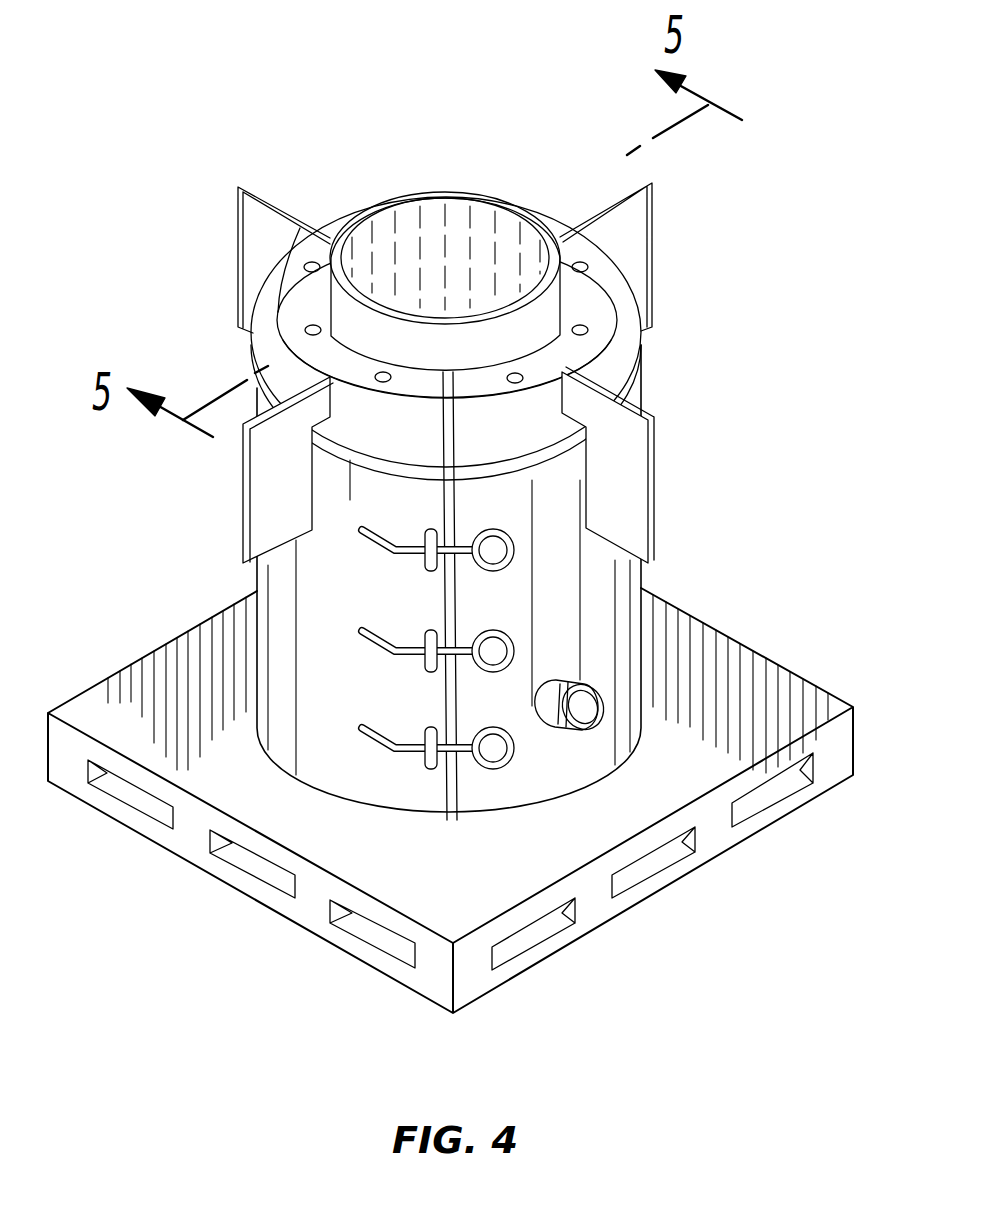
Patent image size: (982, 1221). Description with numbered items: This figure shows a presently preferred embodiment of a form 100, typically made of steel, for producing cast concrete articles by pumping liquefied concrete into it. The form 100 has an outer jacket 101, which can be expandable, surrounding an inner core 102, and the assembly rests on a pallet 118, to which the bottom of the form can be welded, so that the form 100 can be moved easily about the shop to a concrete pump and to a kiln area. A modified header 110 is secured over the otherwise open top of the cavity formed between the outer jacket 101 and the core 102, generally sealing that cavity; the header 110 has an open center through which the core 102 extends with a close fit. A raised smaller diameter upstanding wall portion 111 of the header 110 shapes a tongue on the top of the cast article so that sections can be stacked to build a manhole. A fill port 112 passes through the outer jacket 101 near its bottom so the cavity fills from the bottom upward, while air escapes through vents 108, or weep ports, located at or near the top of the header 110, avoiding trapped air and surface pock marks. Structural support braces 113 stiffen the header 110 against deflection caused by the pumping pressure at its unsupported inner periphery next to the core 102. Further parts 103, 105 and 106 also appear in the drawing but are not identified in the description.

The form 100 is at (469, 151).
The outer jacket 101 is at (284, 582).
The inner core 102 is at (545, 318).
The boss side wall 103 is at (290, 300).
The tubes 105 is at (366, 738).
The rod 106 is at (457, 604).
The vents 108 is at (309, 326).
The modified header 110 is at (258, 342).
The smaller diameter upstanding wall portion 111 is at (618, 385).
The fill port 112 is at (548, 723).
The structural support braces 113 is at (258, 193).
The pallet 118 is at (757, 668).